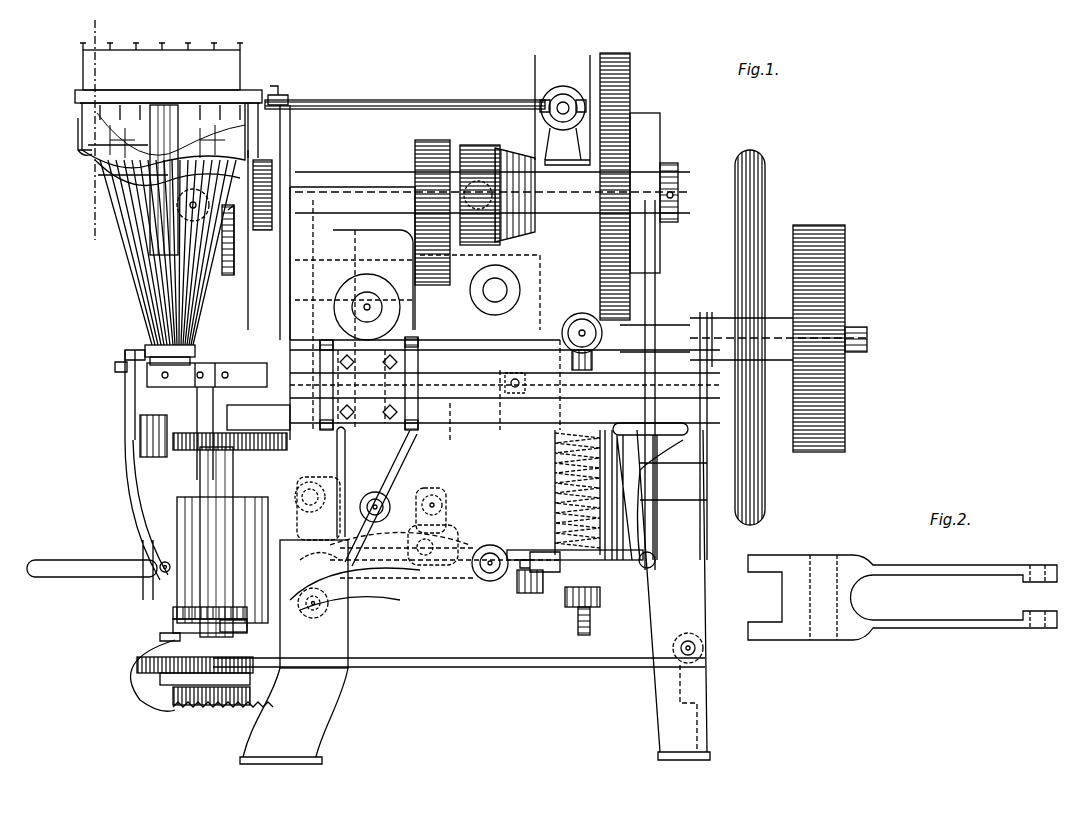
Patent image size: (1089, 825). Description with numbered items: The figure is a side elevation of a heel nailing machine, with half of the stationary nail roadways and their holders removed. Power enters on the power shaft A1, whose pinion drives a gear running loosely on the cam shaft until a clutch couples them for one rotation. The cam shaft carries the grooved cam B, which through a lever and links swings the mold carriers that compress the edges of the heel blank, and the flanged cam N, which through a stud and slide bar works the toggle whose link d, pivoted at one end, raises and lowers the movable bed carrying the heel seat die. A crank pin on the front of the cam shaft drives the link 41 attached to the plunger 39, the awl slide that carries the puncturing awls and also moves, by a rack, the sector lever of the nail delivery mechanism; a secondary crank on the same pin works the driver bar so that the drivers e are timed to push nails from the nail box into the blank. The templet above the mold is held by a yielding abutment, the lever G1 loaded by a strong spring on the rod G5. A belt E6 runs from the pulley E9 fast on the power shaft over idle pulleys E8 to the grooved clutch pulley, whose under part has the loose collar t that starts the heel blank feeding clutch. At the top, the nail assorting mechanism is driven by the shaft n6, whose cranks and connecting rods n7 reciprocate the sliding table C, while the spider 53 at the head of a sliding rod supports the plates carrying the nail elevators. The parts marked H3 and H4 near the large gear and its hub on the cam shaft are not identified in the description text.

In FIG. 1, the spider 53 is at (145, 115).
In FIG. 1, the sliding table C is at (274, 202).
In FIG. 1, the cam N is at (432, 202).
In FIG. 1, the cam B is at (497, 182).
In FIG. 1, the shaft n6 is at (563, 100).
In FIG. 1, the connecting rod n7 is at (474, 100).
In FIG. 1, the gear wheel H3 is at (630, 186).
In FIG. 1, the collar H4 is at (678, 180).
In FIG. 1, the lever G1 is at (555, 315).
In FIG. 2, the lever G1 is at (874, 560).
In FIG. 1, the rod G5 is at (735, 318).
In FIG. 1, the power shaft A1 is at (753, 392).
In FIG. 1, the pulley E9 is at (820, 372).
In FIG. 1, the belt E6 is at (459, 676).
In FIG. 1, the idle pulley E8 is at (698, 650).
In FIG. 1, the link 41 is at (315, 246).
In FIG. 1, the driver e is at (168, 258).
In FIG. 1, the plunger 39 is at (150, 338).
In FIG. 1, the toggle link d is at (318, 612).
In FIG. 1, the loose collar t is at (185, 690).